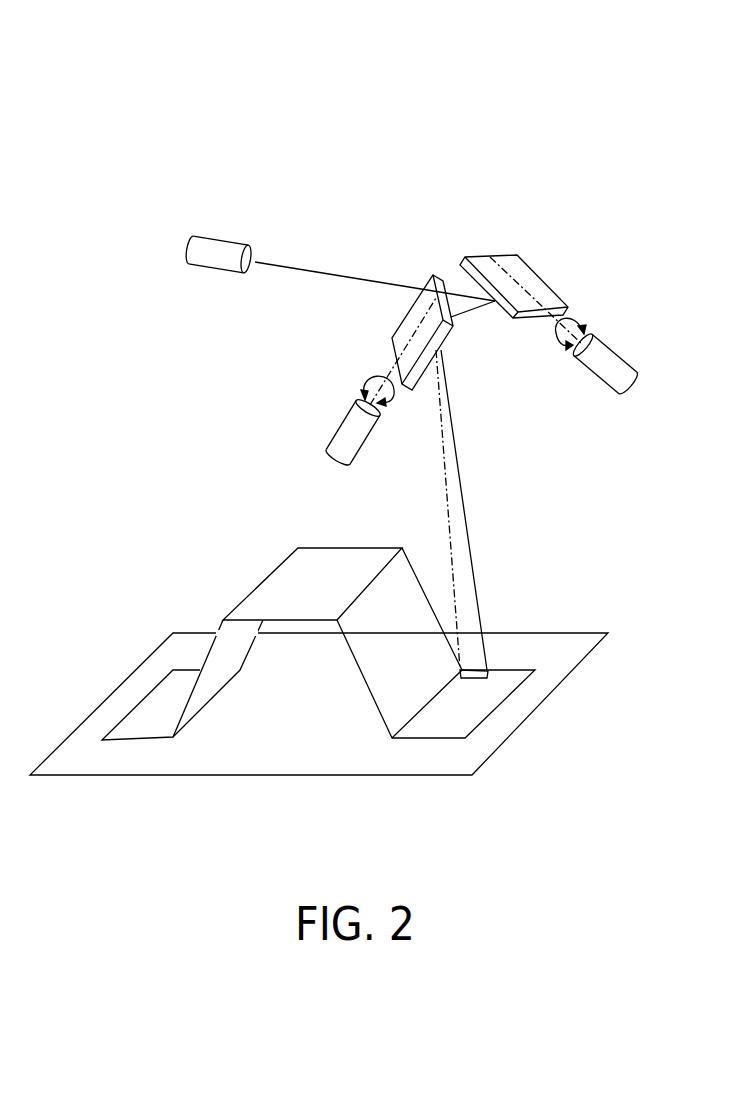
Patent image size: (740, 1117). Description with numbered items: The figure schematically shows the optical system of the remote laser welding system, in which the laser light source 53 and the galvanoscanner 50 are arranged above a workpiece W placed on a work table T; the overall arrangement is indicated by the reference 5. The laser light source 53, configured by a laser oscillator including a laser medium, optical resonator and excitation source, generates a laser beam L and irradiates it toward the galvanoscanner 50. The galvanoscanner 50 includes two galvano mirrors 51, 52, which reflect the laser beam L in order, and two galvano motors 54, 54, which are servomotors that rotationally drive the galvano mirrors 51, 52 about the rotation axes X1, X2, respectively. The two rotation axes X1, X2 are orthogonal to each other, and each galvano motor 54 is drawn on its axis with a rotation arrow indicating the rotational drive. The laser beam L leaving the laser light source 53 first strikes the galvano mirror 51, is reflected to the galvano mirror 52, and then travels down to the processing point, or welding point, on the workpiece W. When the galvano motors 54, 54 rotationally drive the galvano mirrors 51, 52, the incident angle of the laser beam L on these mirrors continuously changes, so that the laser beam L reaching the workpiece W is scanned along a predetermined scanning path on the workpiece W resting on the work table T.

The laser processing device 5 is at (343, 85).
The galvanoscanner 50 is at (443, 227).
The galvano mirror 51 is at (553, 297).
The galvano mirror 52 is at (418, 383).
The laser light source 53 is at (224, 247).
The galvano motor 54 is at (337, 433).
The rotation axis X1 is at (538, 276).
The rotation axis X2 is at (405, 335).
The laser beam L is at (455, 477).
The workpiece W is at (277, 590).
The work table T is at (430, 767).